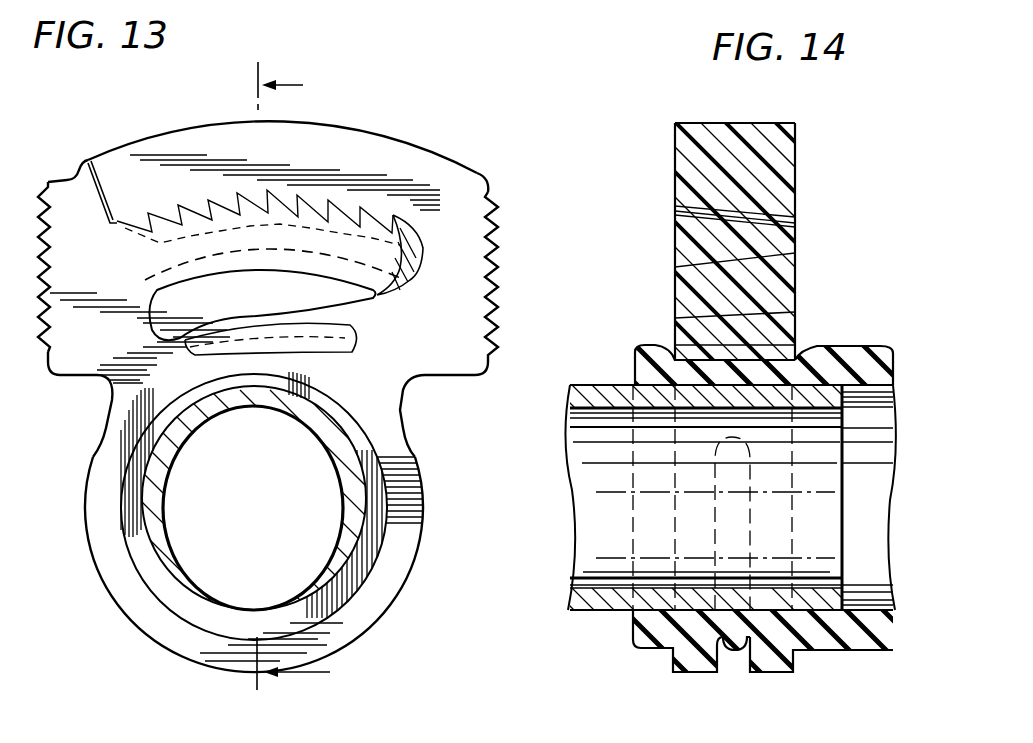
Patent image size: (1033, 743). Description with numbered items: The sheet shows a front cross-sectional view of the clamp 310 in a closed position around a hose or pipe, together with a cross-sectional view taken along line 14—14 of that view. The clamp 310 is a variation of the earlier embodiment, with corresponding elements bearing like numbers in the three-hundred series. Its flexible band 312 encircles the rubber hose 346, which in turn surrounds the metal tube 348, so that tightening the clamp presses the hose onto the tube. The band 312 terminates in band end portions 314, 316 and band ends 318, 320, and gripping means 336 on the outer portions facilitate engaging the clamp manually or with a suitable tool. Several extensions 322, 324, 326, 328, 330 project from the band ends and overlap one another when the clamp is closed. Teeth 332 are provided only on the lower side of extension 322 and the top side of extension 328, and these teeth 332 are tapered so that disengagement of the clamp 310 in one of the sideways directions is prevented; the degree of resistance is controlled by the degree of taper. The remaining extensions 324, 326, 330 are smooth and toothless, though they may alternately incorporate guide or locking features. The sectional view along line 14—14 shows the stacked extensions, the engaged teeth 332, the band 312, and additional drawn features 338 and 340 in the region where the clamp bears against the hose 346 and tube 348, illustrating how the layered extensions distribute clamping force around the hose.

In FIG. 13, the section line 14— 14 is at (310, 376).
In FIG. 13, the clamp 310 is at (455, 124).
In FIG. 14, the clamp 310 is at (832, 110).
In FIG. 13, the flexible band 312 is at (403, 572).
In FIG. 14, the flexible band 312 is at (676, 666).
In FIG. 13, the band end portion 314 is at (401, 408).
In FIG. 13, the band end portion 316 is at (110, 407).
In FIG. 13, the band end 318 is at (468, 173).
In FIG. 13, the band end 320 is at (63, 180).
In FIG. 13, the extension 322 is at (318, 162).
In FIG. 14, the extension 322 is at (695, 165).
In FIG. 13, the extension 324 is at (355, 381).
In FIG. 14, the extension 324 is at (782, 353).
In FIG. 13, the extension 326 is at (305, 302).
In FIG. 14, the extension 326 is at (770, 275).
In FIG. 13, the extension 328 is at (200, 260).
In FIG. 14, the extension 328 is at (692, 238).
In FIG. 13, the extension 330 is at (272, 350).
In FIG. 14, the extension 330 is at (687, 332).
In FIG. 13, the teeth 332 is at (217, 197).
In FIG. 14, the teeth 332 is at (693, 199).
In FIG. 13, the gripping means 336 is at (497, 258).
In FIG. 14, the right lug 338 is at (752, 674).
In FIG. 14, the notch 340 is at (736, 652).
In FIG. 13, the rubber hose 346 is at (383, 483).
In FIG. 14, the rubber hose 346 is at (890, 532).
In FIG. 13, the metal tube 348 is at (160, 493).
In FIG. 14, the metal tube 348 is at (597, 473).